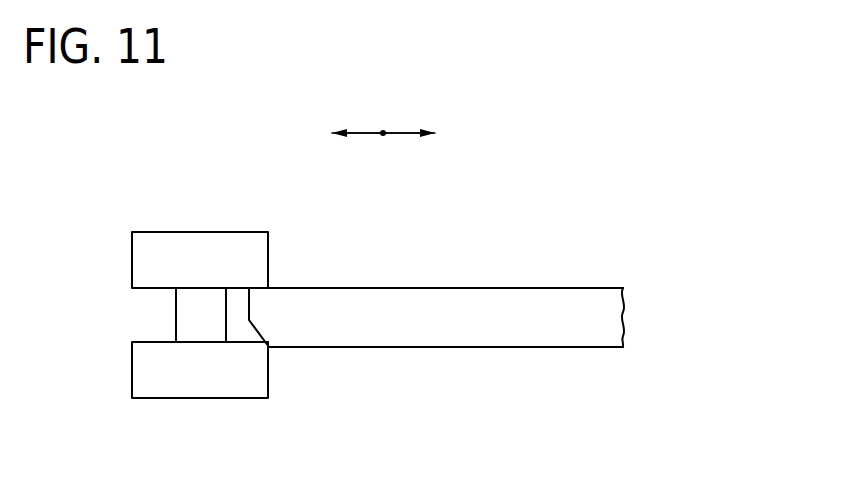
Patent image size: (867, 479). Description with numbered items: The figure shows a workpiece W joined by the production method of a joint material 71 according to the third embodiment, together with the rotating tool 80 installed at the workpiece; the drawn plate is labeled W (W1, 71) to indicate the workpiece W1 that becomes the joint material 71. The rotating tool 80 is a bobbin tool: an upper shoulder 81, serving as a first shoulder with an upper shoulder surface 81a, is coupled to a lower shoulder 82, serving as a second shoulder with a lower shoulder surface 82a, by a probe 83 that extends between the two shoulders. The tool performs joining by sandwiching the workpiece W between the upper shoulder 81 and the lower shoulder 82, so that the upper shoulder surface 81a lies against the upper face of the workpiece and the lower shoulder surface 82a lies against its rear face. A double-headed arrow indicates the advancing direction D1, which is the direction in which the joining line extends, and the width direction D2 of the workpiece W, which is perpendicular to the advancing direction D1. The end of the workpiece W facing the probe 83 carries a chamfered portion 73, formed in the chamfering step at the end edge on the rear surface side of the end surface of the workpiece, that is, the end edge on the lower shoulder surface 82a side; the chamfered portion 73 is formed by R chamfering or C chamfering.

The rotating tool 80 is at (261, 255).
The upper shoulder 81 is at (147, 208).
The upper shoulder surface 81a is at (240, 293).
The lower shoulder 82 is at (258, 382).
The lower shoulder surface 82a is at (252, 320).
The probe 83 is at (205, 298).
The chamfered portion 73 is at (248, 320).
The workpiece W is at (477, 353).
The workpiece W1 is at (477, 353).
The joint material 71 is at (477, 353).
The advancing direction D1 is at (398, 132).
The width direction D2 is at (387, 137).